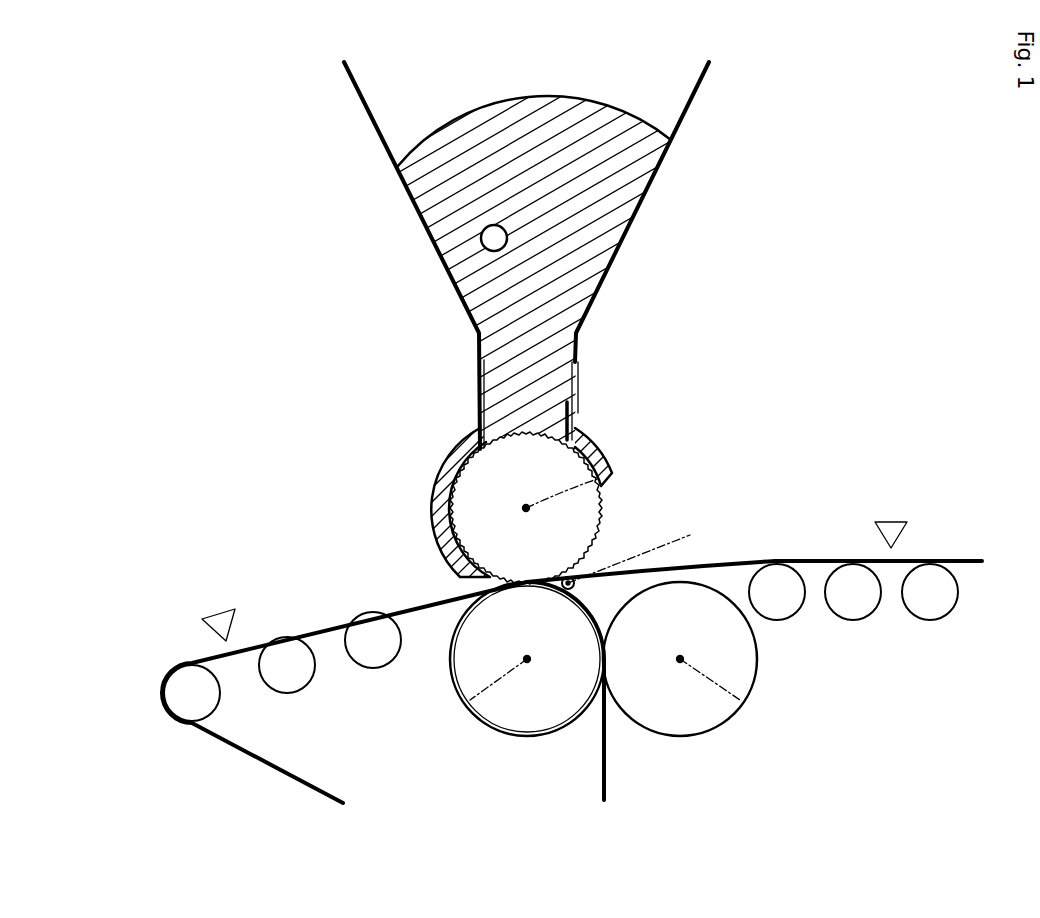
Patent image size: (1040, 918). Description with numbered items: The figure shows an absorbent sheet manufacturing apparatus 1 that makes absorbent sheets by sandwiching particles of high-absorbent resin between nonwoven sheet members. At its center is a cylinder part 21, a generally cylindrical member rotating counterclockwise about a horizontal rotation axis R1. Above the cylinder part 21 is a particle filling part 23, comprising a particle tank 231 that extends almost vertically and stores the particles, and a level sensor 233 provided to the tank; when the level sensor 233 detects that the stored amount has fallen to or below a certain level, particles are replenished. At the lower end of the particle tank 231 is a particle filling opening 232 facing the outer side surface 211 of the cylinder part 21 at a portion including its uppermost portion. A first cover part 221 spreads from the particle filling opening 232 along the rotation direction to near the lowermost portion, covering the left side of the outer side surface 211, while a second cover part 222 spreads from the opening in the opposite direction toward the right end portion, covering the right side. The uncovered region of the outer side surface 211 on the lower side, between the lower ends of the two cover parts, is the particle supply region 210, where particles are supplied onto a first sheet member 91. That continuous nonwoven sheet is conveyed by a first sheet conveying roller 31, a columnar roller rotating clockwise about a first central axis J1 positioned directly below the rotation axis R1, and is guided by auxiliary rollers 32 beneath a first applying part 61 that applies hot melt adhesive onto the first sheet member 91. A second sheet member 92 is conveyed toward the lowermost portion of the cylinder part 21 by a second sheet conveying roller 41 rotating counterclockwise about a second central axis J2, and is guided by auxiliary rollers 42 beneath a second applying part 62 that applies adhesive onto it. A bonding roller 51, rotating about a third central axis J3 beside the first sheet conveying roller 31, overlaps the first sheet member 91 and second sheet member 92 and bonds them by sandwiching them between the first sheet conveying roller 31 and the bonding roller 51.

The absorbent sheet manufacturing apparatus 1 is at (278, 146).
The cylinder part 21 is at (517, 500).
The outer side surface 211 is at (447, 510).
The first cover part 221 is at (455, 460).
The second cover part 222 is at (607, 450).
The particle filling part 23 is at (513, 307).
The particle tank 231 is at (470, 316).
The particle filling opening 232 is at (527, 425).
The level sensor 233 is at (494, 238).
The first sheet conveying roller 31 is at (522, 683).
The auxiliary rollers 32 is at (180, 685).
The second sheet conveying roller 41 is at (640, 553).
The auxiliary rollers 42 is at (782, 600).
The bonding roller 51 is at (685, 683).
The first applying part 61 is at (220, 610).
The second applying part 62 is at (891, 520).
The first sheet member 91 is at (405, 603).
The second sheet member 92 is at (715, 560).
The particle supply region 210 is at (553, 592).
The first central axis J1 is at (460, 710).
The second central axis J2 is at (582, 582).
The third central axis J3 is at (750, 712).
The rotation axis R1 is at (617, 472).